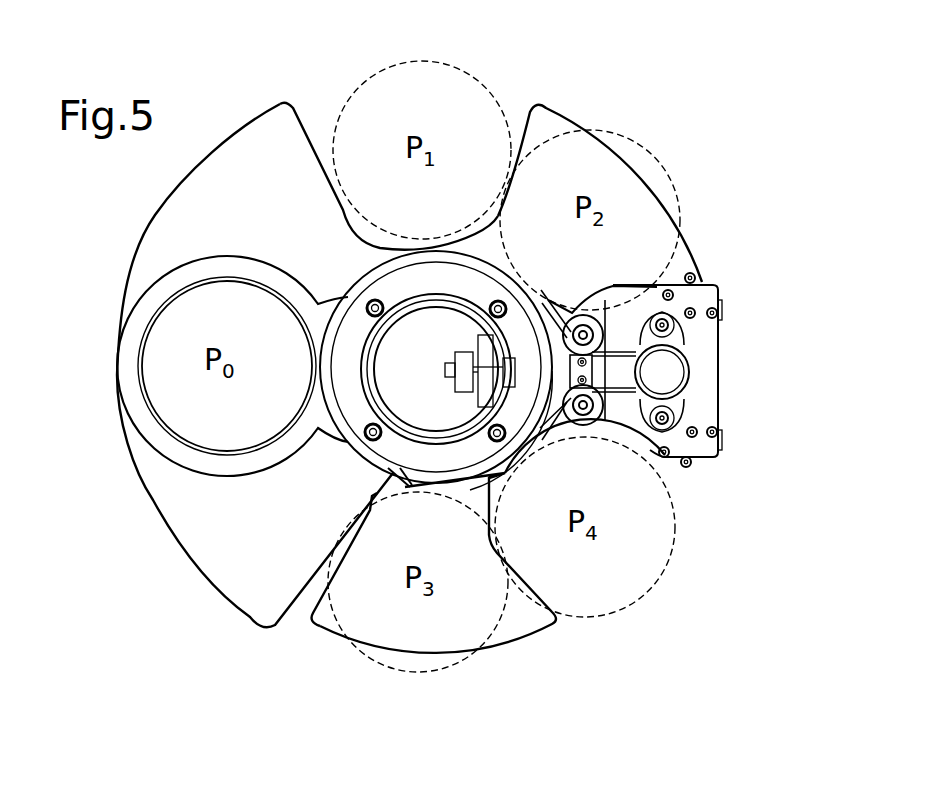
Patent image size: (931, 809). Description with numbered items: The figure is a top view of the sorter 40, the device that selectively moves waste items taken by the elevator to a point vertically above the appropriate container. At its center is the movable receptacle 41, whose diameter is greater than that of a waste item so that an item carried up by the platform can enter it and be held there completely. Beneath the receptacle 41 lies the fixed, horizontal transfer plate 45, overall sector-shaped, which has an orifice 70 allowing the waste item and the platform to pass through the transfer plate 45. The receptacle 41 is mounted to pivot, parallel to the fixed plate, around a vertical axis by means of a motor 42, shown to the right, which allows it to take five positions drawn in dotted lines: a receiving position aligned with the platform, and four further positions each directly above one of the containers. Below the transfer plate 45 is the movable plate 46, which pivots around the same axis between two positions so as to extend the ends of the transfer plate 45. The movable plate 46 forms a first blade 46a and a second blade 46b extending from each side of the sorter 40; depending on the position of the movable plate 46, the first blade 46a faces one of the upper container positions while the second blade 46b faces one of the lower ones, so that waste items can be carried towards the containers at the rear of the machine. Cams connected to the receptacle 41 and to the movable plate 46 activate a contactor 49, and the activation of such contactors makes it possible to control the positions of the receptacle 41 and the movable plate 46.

The sorter 40 is at (700, 527).
The movable receptacle 41 is at (140, 343).
The motor 42 is at (668, 365).
The transfer plate 45 is at (213, 550).
The movable plate 46 is at (540, 620).
The first blade 46a is at (545, 122).
The second blade 46b is at (322, 617).
The contactor 49 is at (592, 370).
The orifice 70 is at (180, 407).